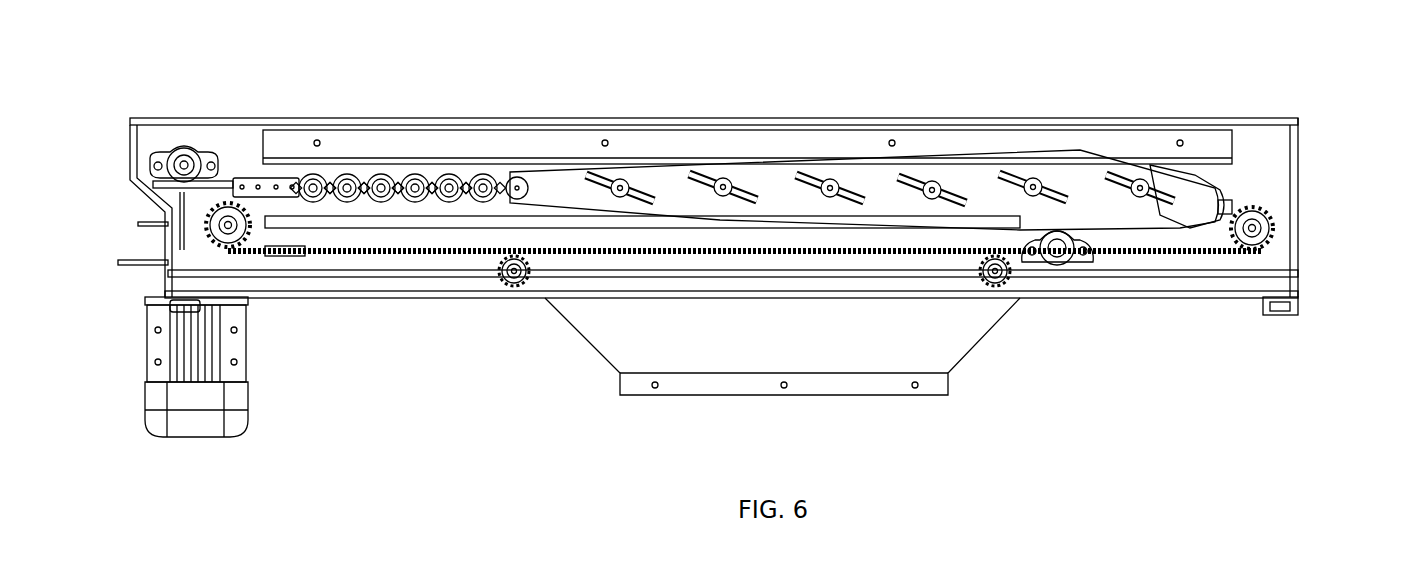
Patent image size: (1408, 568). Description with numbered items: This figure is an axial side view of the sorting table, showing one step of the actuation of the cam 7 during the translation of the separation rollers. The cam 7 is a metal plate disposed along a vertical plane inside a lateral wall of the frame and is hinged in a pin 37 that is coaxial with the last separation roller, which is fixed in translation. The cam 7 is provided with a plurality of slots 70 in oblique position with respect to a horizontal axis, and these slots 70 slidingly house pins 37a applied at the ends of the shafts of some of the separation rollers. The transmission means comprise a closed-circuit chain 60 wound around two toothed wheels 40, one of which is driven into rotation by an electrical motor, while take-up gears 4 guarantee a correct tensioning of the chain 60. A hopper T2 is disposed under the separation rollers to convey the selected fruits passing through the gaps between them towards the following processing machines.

The pin 37 is at (516, 178).
The pins 37a is at (728, 180).
The cam 7 is at (1050, 165).
The slots 70 is at (1168, 197).
The toothed wheels 40 is at (210, 246).
The take-up gears 4 is at (513, 290).
The chain 60 is at (368, 258).
The hopper T2 is at (806, 346).